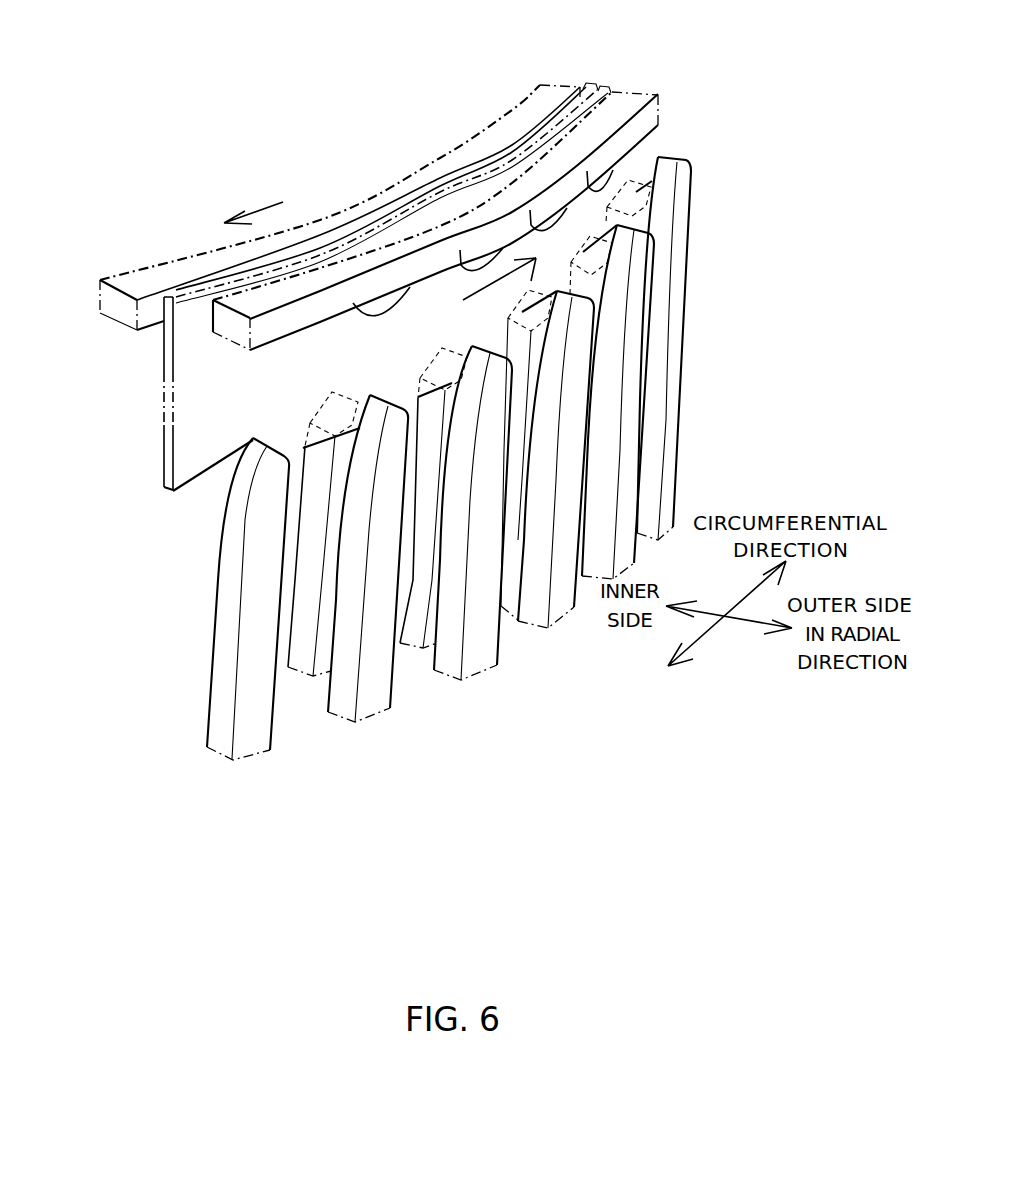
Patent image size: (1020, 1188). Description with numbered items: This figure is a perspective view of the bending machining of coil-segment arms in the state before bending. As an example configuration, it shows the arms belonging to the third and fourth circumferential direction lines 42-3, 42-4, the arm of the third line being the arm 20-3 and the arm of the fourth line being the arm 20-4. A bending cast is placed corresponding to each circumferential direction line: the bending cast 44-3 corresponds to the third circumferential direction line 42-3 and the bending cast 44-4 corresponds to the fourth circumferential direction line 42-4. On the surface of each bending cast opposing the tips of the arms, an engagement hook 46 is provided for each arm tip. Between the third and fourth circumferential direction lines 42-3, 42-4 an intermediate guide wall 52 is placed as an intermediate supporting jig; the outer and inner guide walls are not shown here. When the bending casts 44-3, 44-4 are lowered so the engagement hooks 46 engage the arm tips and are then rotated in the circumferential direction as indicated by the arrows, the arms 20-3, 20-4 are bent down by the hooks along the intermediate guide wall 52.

The arm belonging to the third circumferential direction line 20-3 is at (370, 680).
The arm belonging to the fourth circumferential direction line 20-4 is at (307, 657).
The third circumferential direction line 42-3 is at (199, 765).
The fourth circumferential direction line 42-4 is at (280, 673).
The bending cast corresponding to the third circumferential direction line 44-3 is at (462, 220).
The bending cast corresponding to the fourth circumferential direction line 44-4 is at (182, 272).
The engagement hook 46 is at (415, 307).
The intermediate guide wall 52 is at (207, 410).